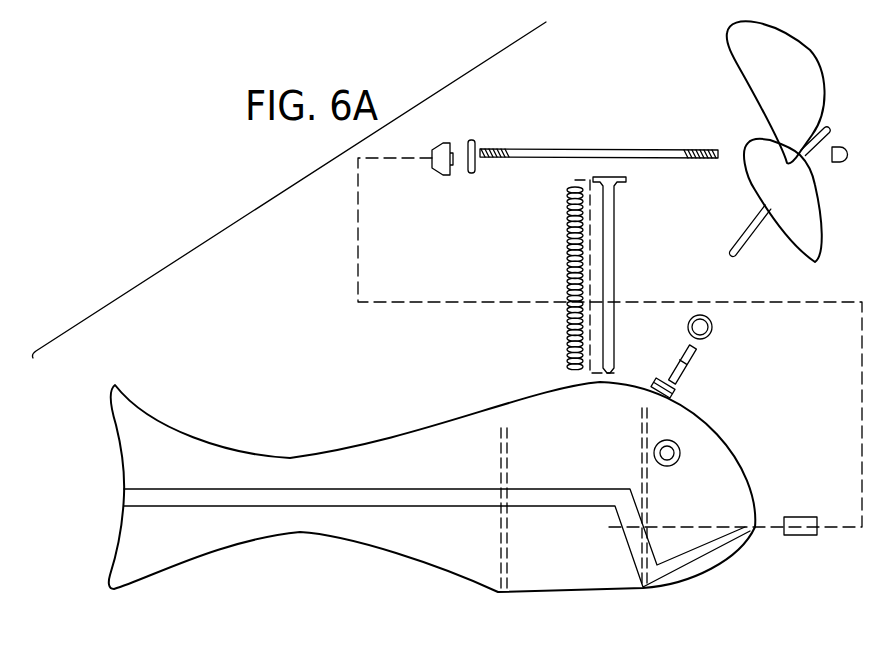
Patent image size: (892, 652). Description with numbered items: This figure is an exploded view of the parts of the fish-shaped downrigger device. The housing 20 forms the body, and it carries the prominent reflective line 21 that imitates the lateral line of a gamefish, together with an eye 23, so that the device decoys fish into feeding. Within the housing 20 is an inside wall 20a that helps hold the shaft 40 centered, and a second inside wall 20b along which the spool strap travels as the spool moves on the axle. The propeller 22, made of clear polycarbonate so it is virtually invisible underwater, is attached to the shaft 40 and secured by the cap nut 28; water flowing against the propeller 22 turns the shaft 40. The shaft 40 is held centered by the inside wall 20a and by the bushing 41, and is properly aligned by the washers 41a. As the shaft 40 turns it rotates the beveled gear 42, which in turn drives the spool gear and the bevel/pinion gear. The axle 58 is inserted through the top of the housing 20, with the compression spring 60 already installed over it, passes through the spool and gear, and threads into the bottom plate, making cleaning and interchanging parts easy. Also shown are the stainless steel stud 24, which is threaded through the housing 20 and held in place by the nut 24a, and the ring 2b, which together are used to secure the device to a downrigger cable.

The housing 20 is at (415, 446).
The inside wall 20a is at (640, 436).
The inside wall 20b is at (502, 562).
The reflective line 21 is at (470, 508).
The propeller 22 is at (817, 56).
The eye 23 is at (680, 458).
The stud 24 is at (692, 360).
The nut 24a is at (676, 394).
The washer / ring 2b is at (712, 335).
The cap nut 28 is at (840, 147).
The shaft 40 is at (621, 148).
The bushing 41 is at (786, 517).
The washers 41a is at (472, 175).
The beveled gear 42 is at (432, 176).
The axle 58 is at (616, 222).
The compression spring 60 is at (567, 203).